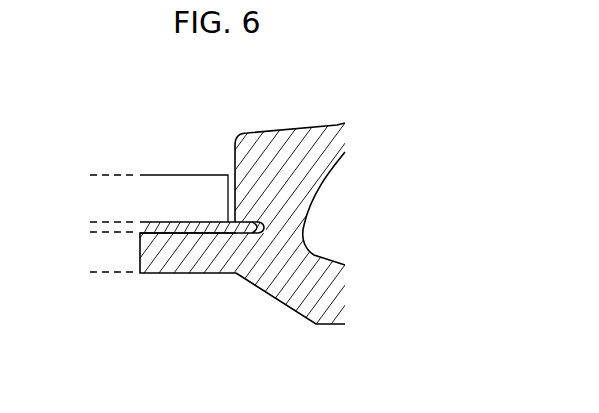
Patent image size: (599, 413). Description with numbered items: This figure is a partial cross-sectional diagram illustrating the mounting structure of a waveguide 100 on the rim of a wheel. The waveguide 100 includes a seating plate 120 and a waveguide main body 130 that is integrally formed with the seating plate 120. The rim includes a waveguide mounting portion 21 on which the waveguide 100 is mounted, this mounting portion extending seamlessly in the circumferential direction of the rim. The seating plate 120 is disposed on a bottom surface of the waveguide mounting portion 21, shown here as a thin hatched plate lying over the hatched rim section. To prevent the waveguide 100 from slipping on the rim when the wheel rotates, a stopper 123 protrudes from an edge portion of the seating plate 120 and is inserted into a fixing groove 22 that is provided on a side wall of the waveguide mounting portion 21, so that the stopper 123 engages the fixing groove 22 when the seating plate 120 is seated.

The waveguide 100 is at (150, 168).
The waveguide main body 130 is at (195, 175).
The fixing groove 22 is at (263, 228).
The waveguide mounting portion 21 is at (213, 255).
The seating plate 120 is at (168, 233).
The stopper 123 is at (265, 226).